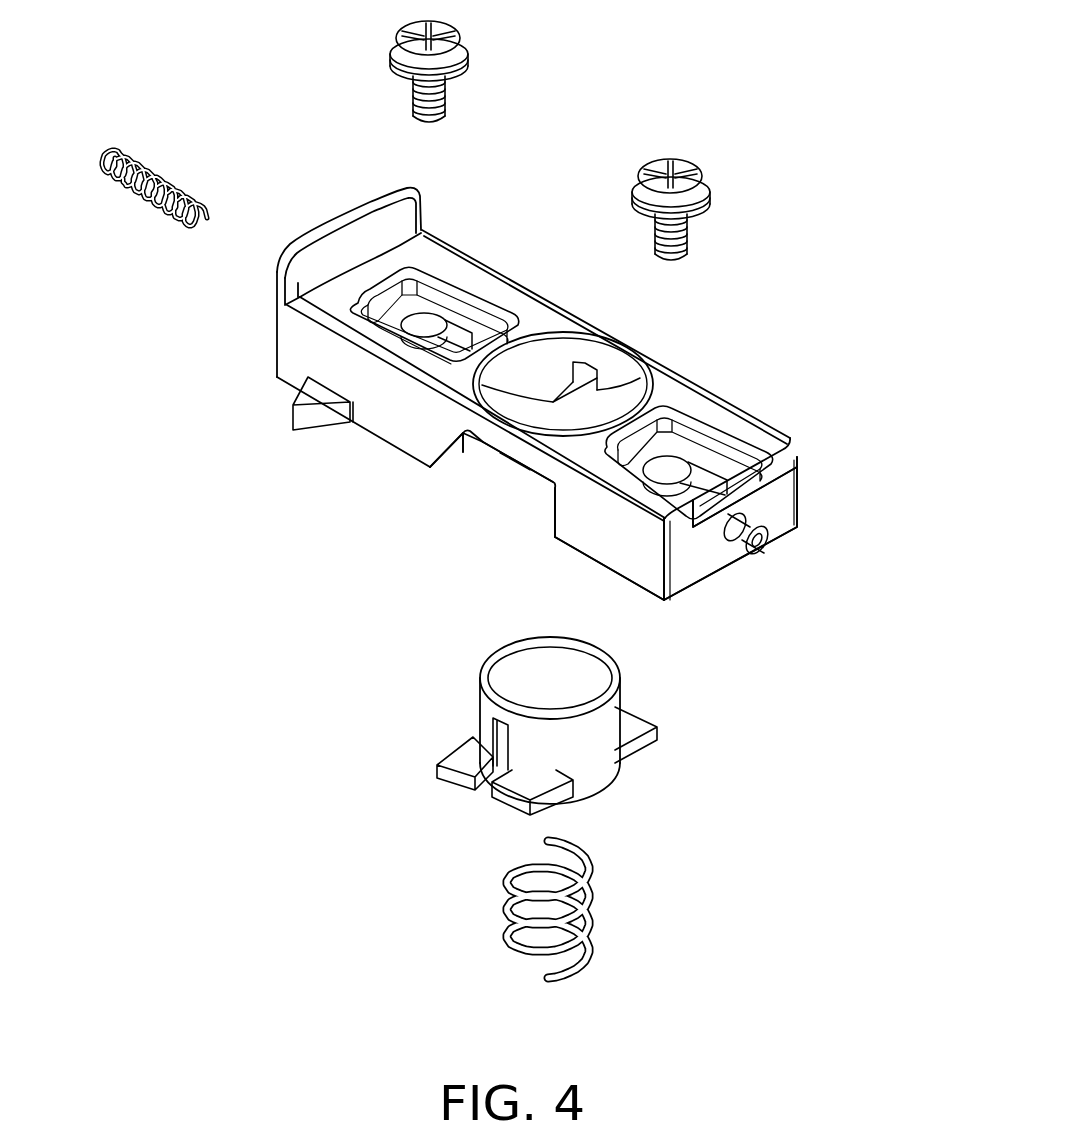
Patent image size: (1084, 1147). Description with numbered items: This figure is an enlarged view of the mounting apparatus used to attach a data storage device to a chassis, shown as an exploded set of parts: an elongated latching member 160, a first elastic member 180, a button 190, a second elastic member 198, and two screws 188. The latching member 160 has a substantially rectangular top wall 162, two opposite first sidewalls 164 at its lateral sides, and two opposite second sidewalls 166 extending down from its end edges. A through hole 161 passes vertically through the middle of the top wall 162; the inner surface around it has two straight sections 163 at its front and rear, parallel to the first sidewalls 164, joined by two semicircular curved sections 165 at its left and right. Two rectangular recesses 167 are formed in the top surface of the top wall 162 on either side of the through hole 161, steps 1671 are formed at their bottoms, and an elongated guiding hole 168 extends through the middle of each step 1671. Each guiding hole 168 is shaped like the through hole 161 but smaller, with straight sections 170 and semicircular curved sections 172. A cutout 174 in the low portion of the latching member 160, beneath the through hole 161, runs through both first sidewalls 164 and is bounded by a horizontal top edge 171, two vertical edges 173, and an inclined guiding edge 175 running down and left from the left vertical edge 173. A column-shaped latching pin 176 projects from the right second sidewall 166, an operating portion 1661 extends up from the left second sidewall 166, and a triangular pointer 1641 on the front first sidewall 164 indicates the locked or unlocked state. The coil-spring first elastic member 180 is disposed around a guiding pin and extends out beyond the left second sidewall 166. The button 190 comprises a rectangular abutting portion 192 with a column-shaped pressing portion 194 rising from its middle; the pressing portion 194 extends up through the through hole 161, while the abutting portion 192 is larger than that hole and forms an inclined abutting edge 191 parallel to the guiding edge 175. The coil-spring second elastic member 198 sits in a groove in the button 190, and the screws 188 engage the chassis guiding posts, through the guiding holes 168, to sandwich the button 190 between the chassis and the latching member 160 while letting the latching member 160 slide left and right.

The latching member 160 is at (710, 343).
The through hole 161 is at (527, 410).
The top wall 162 is at (703, 403).
The straight sections 163 is at (613, 372).
The first sidewalls 164 is at (608, 537).
The triangular pointer 1641 is at (320, 420).
The curved sections 165 is at (627, 420).
The second sidewalls 166 is at (697, 570).
The operating portion 1661 is at (310, 227).
The rectangular recesses 167 is at (730, 457).
The steps 1671 is at (780, 505).
The guiding hole 168 is at (445, 343).
The straight sections 170 is at (450, 327).
The horizontal top edge 171 is at (500, 455).
The curved sections 172 is at (410, 327).
The vertical edges 173 is at (468, 442).
The cutout 174 is at (515, 495).
The inclined guiding edge 175 is at (447, 462).
The latching pin 176 is at (760, 547).
The first elastic member 180 is at (147, 160).
The screws 188 is at (683, 157).
The button 190 is at (470, 672).
The inclined abutting edge 191 is at (450, 765).
The abutting portion 192 is at (470, 755).
The pressing portion 194 is at (572, 683).
The second elastic member 198 is at (580, 865).